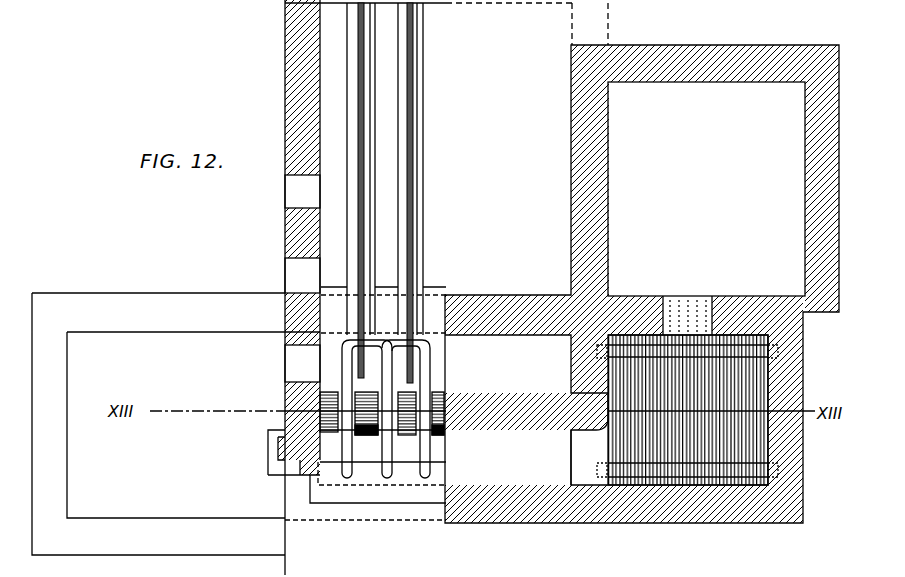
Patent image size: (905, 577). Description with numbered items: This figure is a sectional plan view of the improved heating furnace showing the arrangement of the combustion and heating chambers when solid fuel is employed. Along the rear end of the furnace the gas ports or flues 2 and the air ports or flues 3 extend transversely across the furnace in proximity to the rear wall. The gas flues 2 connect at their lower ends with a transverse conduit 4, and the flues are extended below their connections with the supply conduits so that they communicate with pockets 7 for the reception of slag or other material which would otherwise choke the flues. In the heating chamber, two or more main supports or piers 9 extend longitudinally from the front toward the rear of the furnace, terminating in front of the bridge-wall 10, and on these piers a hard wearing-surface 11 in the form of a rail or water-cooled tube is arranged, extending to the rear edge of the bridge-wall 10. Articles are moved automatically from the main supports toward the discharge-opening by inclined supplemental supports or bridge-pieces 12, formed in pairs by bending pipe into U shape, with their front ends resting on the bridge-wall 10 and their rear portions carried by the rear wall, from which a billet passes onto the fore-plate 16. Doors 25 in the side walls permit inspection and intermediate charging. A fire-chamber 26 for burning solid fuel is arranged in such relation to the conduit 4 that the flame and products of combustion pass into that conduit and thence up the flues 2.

The gas ports or flues 2 is at (363, 393).
The air ports or flues 3 is at (331, 393).
The transverse conduit 4 is at (534, 457).
The pockets 7 is at (418, 318).
The main supports or piers 9 is at (402, 108).
The bridge-wall 10 is at (383, 314).
The wearing-surface 11 is at (412, 202).
The inclined supplemental supports or bridge-pieces 12 is at (438, 346).
The fore-plate 16 is at (365, 491).
The doors 25 is at (302, 278).
The fire-chamber 26 is at (687, 410).